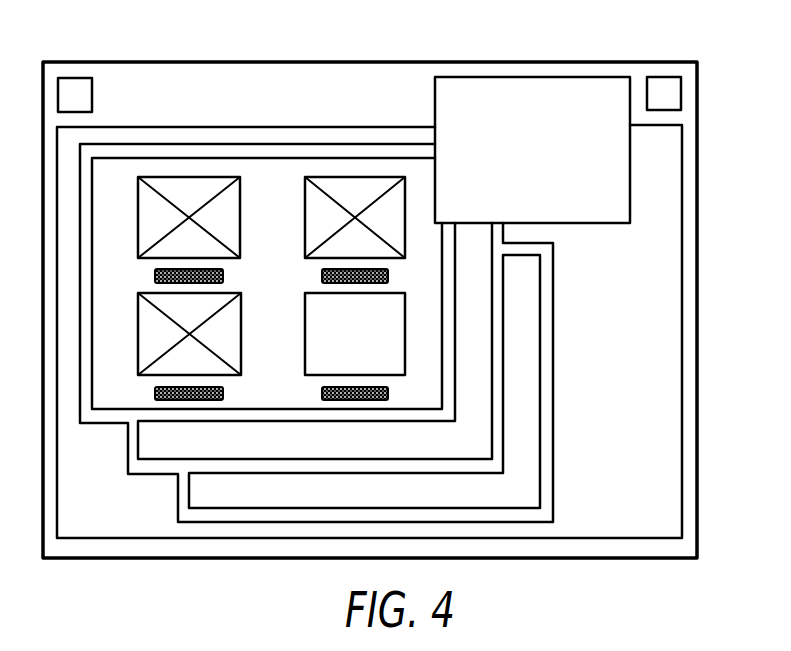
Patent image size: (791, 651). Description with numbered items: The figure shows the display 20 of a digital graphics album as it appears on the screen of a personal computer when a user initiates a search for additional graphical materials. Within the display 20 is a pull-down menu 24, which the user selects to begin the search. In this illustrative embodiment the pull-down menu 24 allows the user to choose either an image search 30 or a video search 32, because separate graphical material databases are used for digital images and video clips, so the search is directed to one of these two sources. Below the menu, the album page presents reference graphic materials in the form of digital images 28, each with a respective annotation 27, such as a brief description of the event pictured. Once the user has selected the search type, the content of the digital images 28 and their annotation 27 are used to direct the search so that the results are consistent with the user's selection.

The display 20 is at (699, 297).
The pull-down menu 24 is at (503, 77).
The annotation 27 is at (155, 276).
The digital images 28 is at (180, 177).
The image search 30 is at (612, 148).
The video search 32 is at (612, 200).